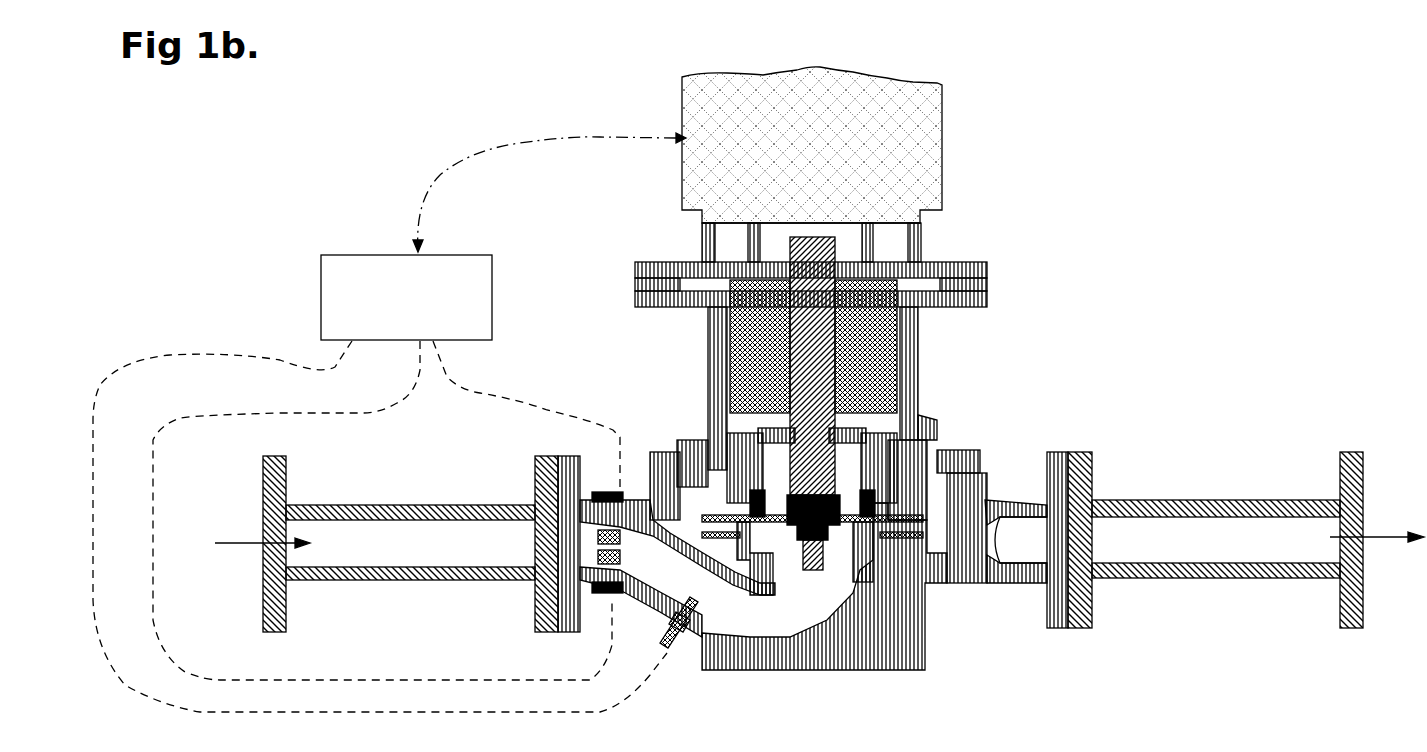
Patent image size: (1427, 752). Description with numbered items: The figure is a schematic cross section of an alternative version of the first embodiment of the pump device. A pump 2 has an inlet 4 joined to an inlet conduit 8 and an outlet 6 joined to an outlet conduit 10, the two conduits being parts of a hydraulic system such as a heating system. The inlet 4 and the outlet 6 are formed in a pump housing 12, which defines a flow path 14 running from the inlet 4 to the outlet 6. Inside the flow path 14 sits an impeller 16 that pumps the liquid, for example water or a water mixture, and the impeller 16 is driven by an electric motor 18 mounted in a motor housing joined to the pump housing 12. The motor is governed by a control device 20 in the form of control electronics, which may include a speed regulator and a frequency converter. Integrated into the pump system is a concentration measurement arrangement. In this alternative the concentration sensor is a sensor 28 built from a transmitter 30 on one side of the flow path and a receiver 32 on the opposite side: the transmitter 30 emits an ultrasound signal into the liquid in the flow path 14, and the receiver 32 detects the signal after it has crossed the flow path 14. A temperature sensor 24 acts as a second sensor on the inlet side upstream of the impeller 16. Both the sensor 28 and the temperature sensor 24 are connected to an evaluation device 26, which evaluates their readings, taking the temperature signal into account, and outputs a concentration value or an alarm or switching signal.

The pump 2 is at (1010, 356).
The inlet 4 is at (580, 543).
The outlet 6 is at (1030, 545).
The inlet conduit 8 is at (388, 545).
The outlet conduit 10 is at (1213, 537).
The pump housing 12 is at (925, 643).
The flow path 14 is at (792, 616).
The impeller 16 is at (893, 515).
The electric motor 18 is at (935, 336).
The control device 20 is at (925, 113).
The temperature sensor 24 is at (680, 645).
The evaluation device 26 is at (400, 311).
The sensor 28 is at (598, 478).
The transmitter 30 is at (618, 598).
The receiver 32 is at (617, 487).